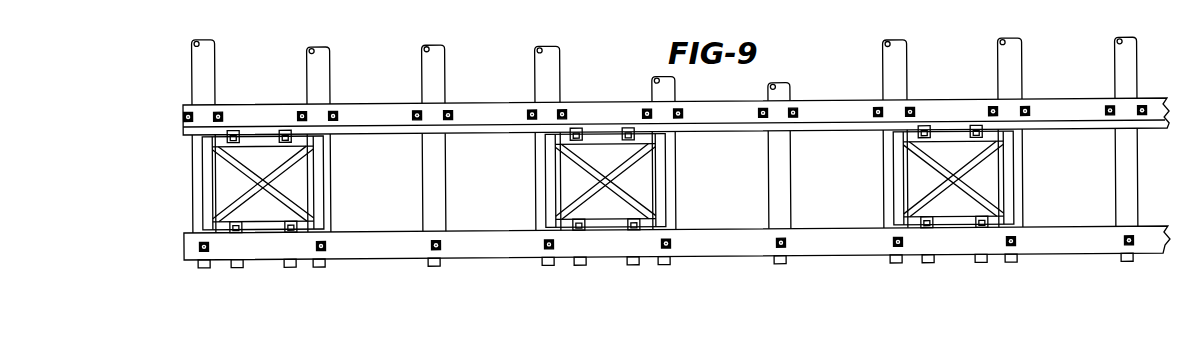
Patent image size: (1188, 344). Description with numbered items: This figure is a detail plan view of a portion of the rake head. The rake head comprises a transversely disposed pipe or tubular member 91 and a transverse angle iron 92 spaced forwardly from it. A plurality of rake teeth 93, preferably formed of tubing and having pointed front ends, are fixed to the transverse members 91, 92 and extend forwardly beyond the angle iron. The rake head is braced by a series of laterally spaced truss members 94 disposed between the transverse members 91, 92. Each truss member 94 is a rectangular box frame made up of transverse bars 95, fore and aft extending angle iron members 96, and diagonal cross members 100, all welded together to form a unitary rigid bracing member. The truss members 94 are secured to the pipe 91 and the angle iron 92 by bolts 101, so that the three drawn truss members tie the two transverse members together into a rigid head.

The pipe 91 is at (501, 262).
The transverse angle iron 92 is at (505, 80).
The rake teeth 93 is at (426, 64).
The truss members 94 is at (326, 185).
The transverse bars 95 is at (943, 229).
The fore and aft extending angle iron members 96 is at (205, 186).
The diagonal cross members 100 is at (294, 204).
The bolts 101 is at (284, 136).